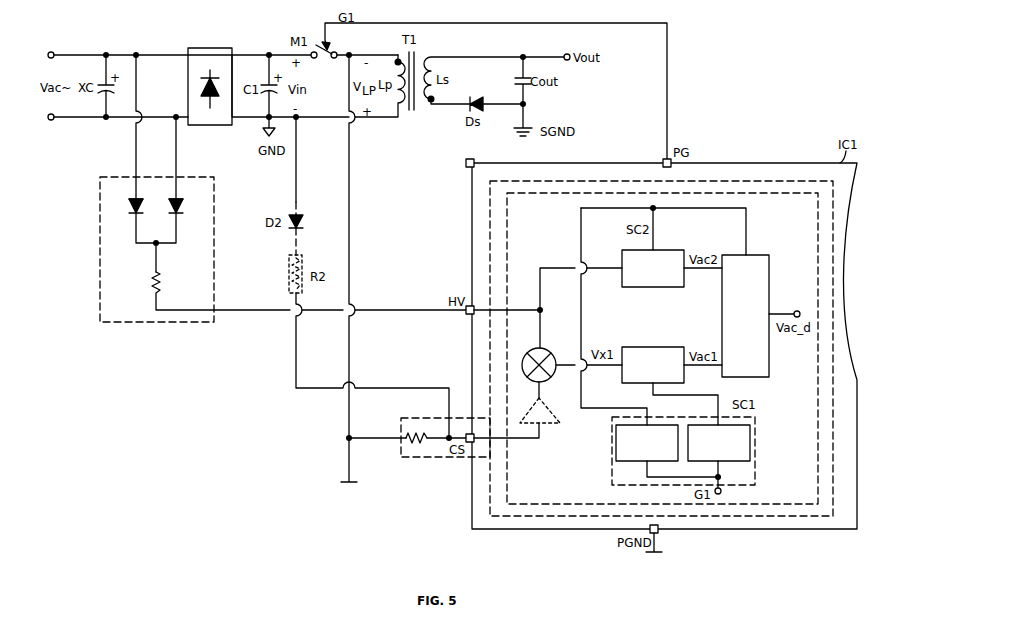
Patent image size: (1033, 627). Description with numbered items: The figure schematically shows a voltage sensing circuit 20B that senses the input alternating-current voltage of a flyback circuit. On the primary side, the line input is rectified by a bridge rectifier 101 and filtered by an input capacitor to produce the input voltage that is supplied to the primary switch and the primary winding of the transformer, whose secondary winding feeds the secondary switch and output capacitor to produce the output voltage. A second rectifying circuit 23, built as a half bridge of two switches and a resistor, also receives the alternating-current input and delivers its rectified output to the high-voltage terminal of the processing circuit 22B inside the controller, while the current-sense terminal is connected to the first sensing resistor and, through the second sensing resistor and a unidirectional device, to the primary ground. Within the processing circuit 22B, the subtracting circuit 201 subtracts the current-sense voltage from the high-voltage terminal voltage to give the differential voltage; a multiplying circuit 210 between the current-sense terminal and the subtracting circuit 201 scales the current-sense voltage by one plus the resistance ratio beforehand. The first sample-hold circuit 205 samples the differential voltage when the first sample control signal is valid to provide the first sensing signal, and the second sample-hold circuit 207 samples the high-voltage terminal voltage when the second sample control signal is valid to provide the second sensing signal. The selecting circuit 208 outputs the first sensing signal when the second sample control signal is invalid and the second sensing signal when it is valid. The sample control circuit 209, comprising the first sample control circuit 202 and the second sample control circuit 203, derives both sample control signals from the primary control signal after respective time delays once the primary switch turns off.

The bridge rectifier 101 is at (206, 48).
The second rectifying circuit 23 is at (140, 323).
The voltage sensing circuit 20B is at (403, 458).
The processing circuit 22B is at (662, 348).
The subtracting circuit 201 is at (549, 352).
The first sample-hold circuit 205 is at (657, 347).
The second sample-hold circuit 207 is at (621, 260).
The selecting circuit 208 is at (745, 316).
The sample control circuit 209 is at (698, 443).
The first sample control circuit 202 is at (757, 430).
The second sample control circuit 203 is at (647, 443).
The multiplying circuit 210 is at (553, 425).